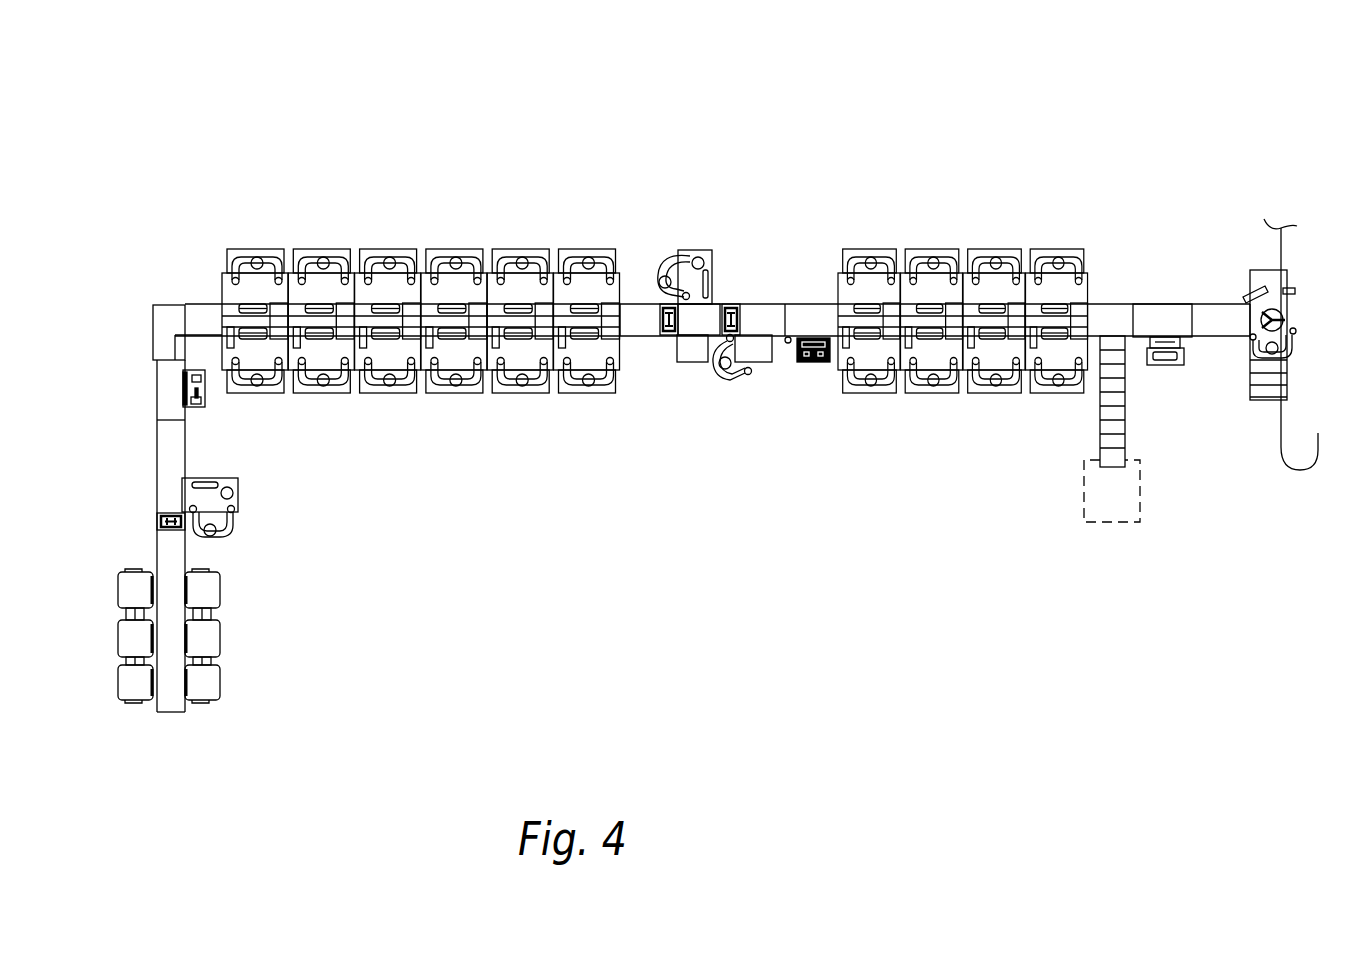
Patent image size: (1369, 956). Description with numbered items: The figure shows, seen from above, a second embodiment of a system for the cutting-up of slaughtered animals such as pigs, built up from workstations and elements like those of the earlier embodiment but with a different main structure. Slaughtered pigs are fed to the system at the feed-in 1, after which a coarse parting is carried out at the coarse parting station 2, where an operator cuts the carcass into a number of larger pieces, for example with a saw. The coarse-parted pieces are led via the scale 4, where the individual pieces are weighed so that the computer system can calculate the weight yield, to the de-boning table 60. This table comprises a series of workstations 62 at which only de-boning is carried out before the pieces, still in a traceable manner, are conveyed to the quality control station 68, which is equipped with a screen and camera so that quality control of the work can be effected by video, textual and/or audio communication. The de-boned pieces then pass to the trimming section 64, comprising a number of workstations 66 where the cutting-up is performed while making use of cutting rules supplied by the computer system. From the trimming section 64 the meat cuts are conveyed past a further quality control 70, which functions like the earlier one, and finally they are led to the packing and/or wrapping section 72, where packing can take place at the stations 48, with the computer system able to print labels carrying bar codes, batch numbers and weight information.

The feed-in 1 is at (1277, 420).
The coarse parting station 2 is at (1296, 302).
The scale 4 is at (1163, 303).
The packing stations 48 is at (118, 634).
The de-boning table 60 is at (933, 217).
The workstation 62 is at (837, 290).
The trimming section 64 is at (468, 196).
The workstation 66 is at (222, 287).
The quality control station 68 is at (710, 214).
The quality control 70 is at (268, 499).
The packing and/or wrapping section 72 is at (197, 655).